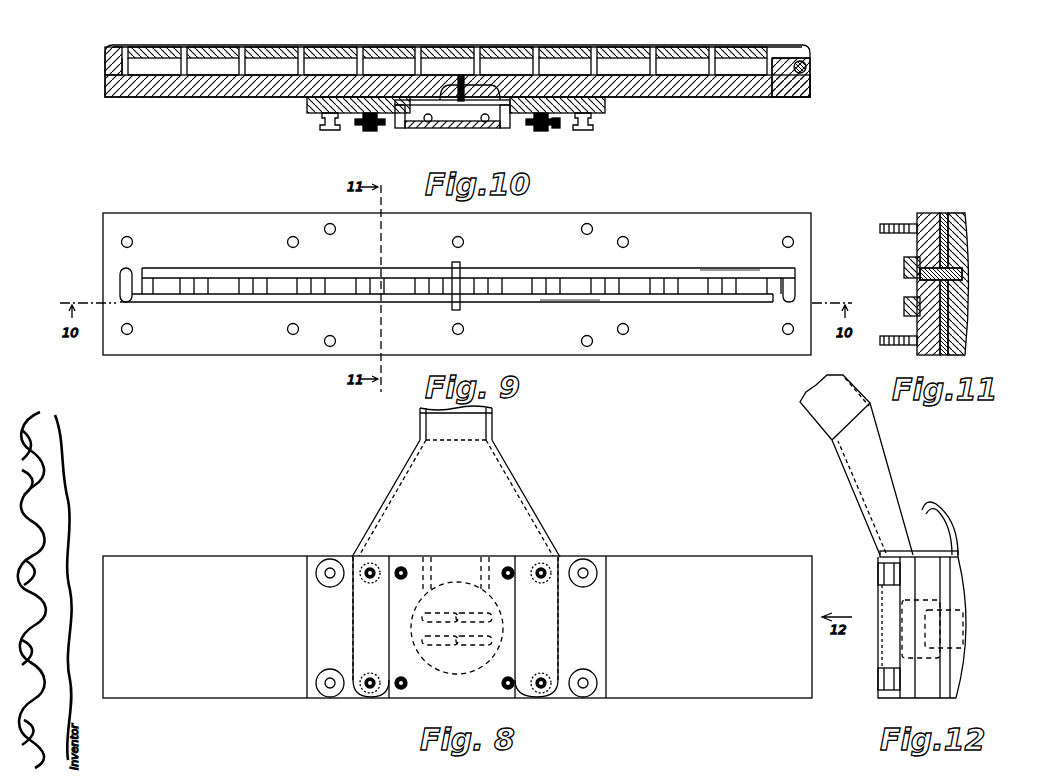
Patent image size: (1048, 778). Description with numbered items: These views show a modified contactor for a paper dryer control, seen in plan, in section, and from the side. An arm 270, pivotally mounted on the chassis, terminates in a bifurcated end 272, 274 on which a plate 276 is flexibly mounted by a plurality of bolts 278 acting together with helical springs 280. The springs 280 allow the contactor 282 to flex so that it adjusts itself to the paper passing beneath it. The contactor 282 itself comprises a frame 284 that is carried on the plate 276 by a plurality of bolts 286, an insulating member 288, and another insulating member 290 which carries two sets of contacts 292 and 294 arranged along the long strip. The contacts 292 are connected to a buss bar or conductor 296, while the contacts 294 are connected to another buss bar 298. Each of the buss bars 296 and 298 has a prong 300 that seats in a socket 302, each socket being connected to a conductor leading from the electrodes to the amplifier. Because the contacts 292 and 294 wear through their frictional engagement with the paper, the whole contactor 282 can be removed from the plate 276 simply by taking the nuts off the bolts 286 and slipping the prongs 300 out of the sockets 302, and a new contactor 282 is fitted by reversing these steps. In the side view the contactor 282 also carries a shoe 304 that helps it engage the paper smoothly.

In FIG. 8, the arm 270 is at (425, 419).
In FIG. 12, the arm 270 is at (827, 418).
In FIG. 8, the bifurcated end 272 is at (548, 633).
In FIG. 8, the bifurcated end 274 is at (362, 630).
In FIG. 10, the plate 276 is at (604, 106).
In FIG. 10, the bolts 278 is at (548, 129).
In FIG. 10, the helical springs 280 is at (371, 132).
In FIG. 10, the contactor 282 is at (811, 86).
In FIG. 10, the frame 284 is at (735, 86).
In FIG. 11, the frame 284 is at (919, 215).
In FIG. 10, the bolts 286 is at (330, 132).
In FIG. 11, the bolts 286 is at (881, 225).
In FIG. 8, the bolts 286 is at (584, 571).
In FIG. 10, the insulating member 288 is at (807, 68).
In FIG. 10, the insulating member 290 is at (811, 49).
In FIG. 11, the insulating member 290 is at (968, 259).
In FIG. 10, the contacts 292 is at (709, 48).
In FIG. 9, the contacts 292 is at (128, 271).
In FIG. 10, the contacts 294 is at (742, 51).
In FIG. 9, the contacts 294 is at (208, 290).
In FIG. 11, the contacts 294 is at (967, 293).
In FIG. 10, the buss bar 296 is at (758, 74).
In FIG. 9, the buss bar 296 is at (568, 301).
In FIG. 11, the buss bar 296 is at (905, 303).
In FIG. 9, the buss bar 298 is at (690, 271).
In FIG. 11, the buss bar 298 is at (904, 269).
In FIG. 10, the prong 300 is at (471, 47).
In FIG. 9, the prong 300 is at (462, 268).
In FIG. 10, the sockets 302 is at (479, 105).
In FIG. 12, the shoe 304 is at (953, 530).